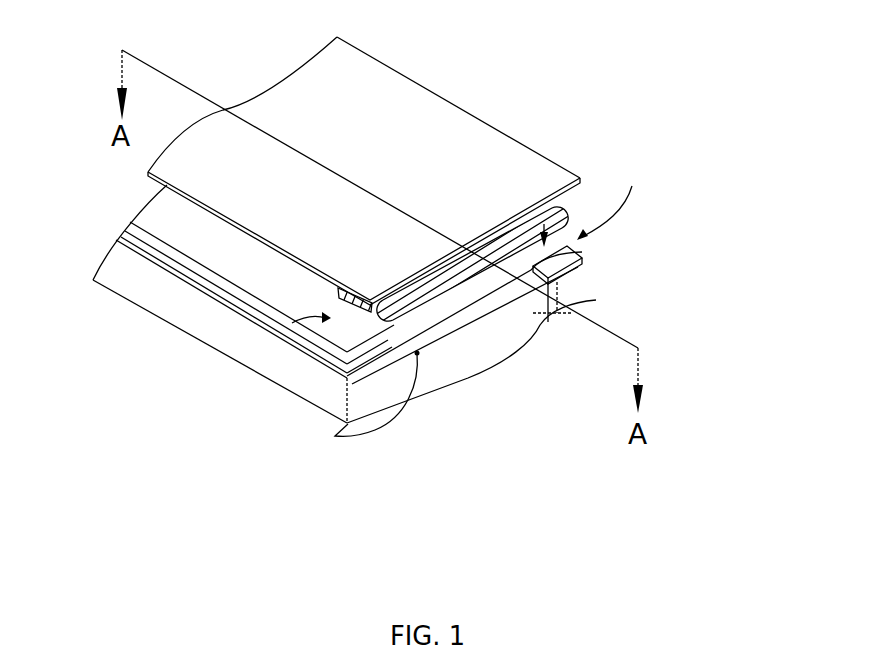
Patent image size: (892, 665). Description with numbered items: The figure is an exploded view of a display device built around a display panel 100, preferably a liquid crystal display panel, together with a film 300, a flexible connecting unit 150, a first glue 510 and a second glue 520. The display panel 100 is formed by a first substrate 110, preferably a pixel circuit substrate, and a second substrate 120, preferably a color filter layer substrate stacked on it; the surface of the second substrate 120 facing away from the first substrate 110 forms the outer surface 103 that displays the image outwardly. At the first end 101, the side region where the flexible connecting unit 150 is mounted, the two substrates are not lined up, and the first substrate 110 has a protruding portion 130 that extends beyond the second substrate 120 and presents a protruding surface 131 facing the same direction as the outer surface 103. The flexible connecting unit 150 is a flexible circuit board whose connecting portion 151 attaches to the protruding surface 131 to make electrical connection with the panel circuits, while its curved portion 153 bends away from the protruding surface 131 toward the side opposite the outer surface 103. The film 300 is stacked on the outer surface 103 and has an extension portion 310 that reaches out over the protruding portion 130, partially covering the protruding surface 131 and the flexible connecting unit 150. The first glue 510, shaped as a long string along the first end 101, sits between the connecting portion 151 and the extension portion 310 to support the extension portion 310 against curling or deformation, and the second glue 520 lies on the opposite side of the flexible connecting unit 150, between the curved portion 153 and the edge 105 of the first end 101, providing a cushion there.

The display panel 100 is at (342, 307).
The first end 101 is at (598, 200).
The outer surface 103 is at (292, 323).
The edge 105 is at (395, 403).
The first substrate 110 is at (137, 240).
The second substrate 120 is at (163, 252).
The protruding portion 130 is at (225, 292).
The protruding surface 131 is at (547, 212).
The flexible connecting unit 150 is at (643, 250).
The connecting portion 151 is at (582, 255).
The curved portion 153 is at (557, 313).
The film 300 is at (364, 66).
The extension portion 310 is at (530, 160).
The first glue 510 is at (433, 300).
The second glue 520 is at (418, 358).